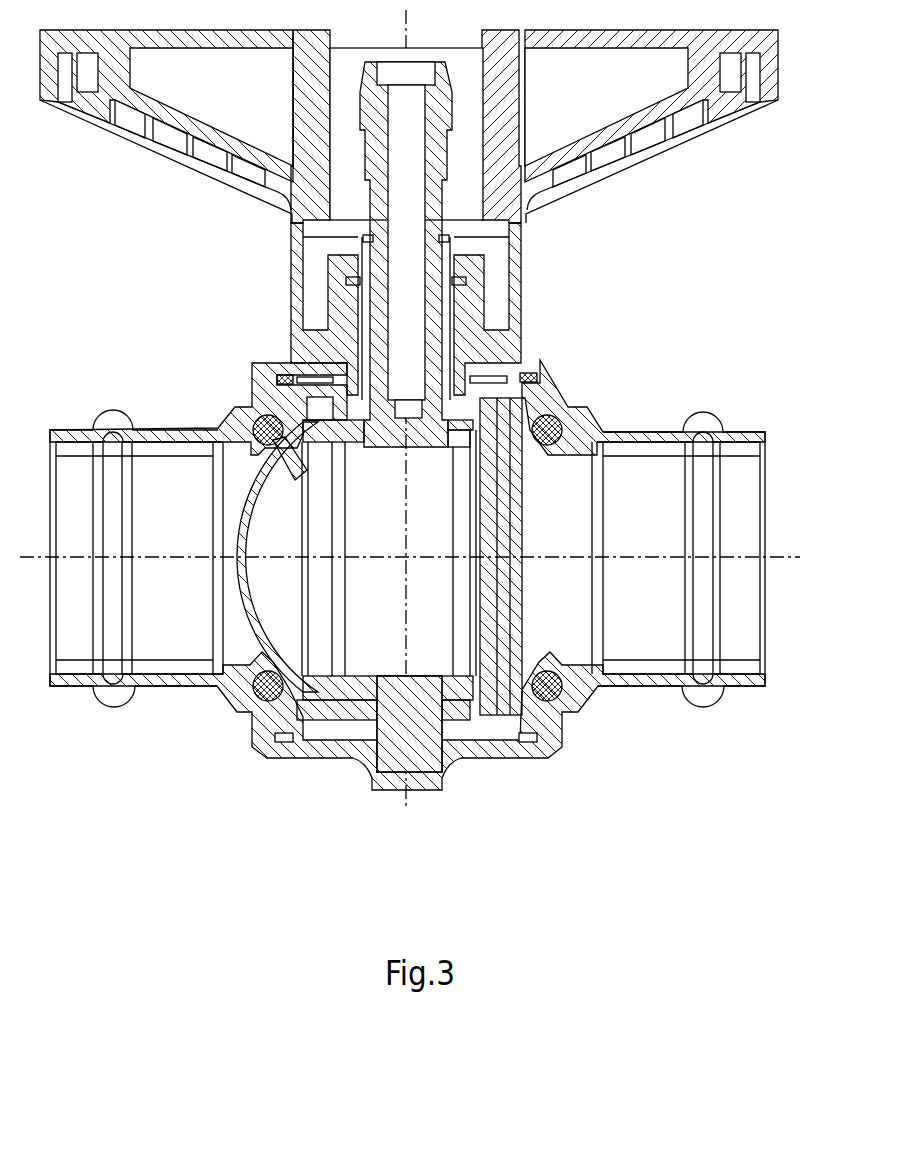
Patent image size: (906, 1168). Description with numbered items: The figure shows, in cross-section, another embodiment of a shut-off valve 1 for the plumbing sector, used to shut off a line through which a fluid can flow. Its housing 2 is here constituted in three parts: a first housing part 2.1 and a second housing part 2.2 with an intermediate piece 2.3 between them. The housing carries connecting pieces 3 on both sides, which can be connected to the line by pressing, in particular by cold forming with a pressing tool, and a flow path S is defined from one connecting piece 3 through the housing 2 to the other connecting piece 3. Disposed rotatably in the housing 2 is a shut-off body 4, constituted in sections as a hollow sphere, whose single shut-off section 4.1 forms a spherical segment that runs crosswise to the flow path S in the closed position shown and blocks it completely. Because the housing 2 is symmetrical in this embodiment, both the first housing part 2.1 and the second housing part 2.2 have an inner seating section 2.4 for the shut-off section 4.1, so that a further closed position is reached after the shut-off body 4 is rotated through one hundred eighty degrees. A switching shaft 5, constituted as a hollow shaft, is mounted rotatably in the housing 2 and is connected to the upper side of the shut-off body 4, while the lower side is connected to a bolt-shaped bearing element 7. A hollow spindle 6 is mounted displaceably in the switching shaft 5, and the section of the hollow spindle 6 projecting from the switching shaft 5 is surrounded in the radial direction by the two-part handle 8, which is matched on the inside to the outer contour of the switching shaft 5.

The shut-off valve 1 is at (742, 247).
The housing 2 is at (608, 388).
The first housing part 2.1 is at (265, 397).
The second housing part 2.2 is at (553, 382).
The intermediate piece 2.3 is at (303, 370).
The inner seating section 2.4 is at (273, 455).
The connecting pieces 3 is at (67, 418).
The shut-off body 4 is at (243, 613).
The shut-off section 4.1 is at (243, 592).
The switching shaft 5 is at (497, 357).
The hollow spindle 6 is at (458, 147).
The bolt-shaped bearing element 7 is at (422, 753).
The handle 8 is at (130, 160).
The flow path S is at (408, 558).